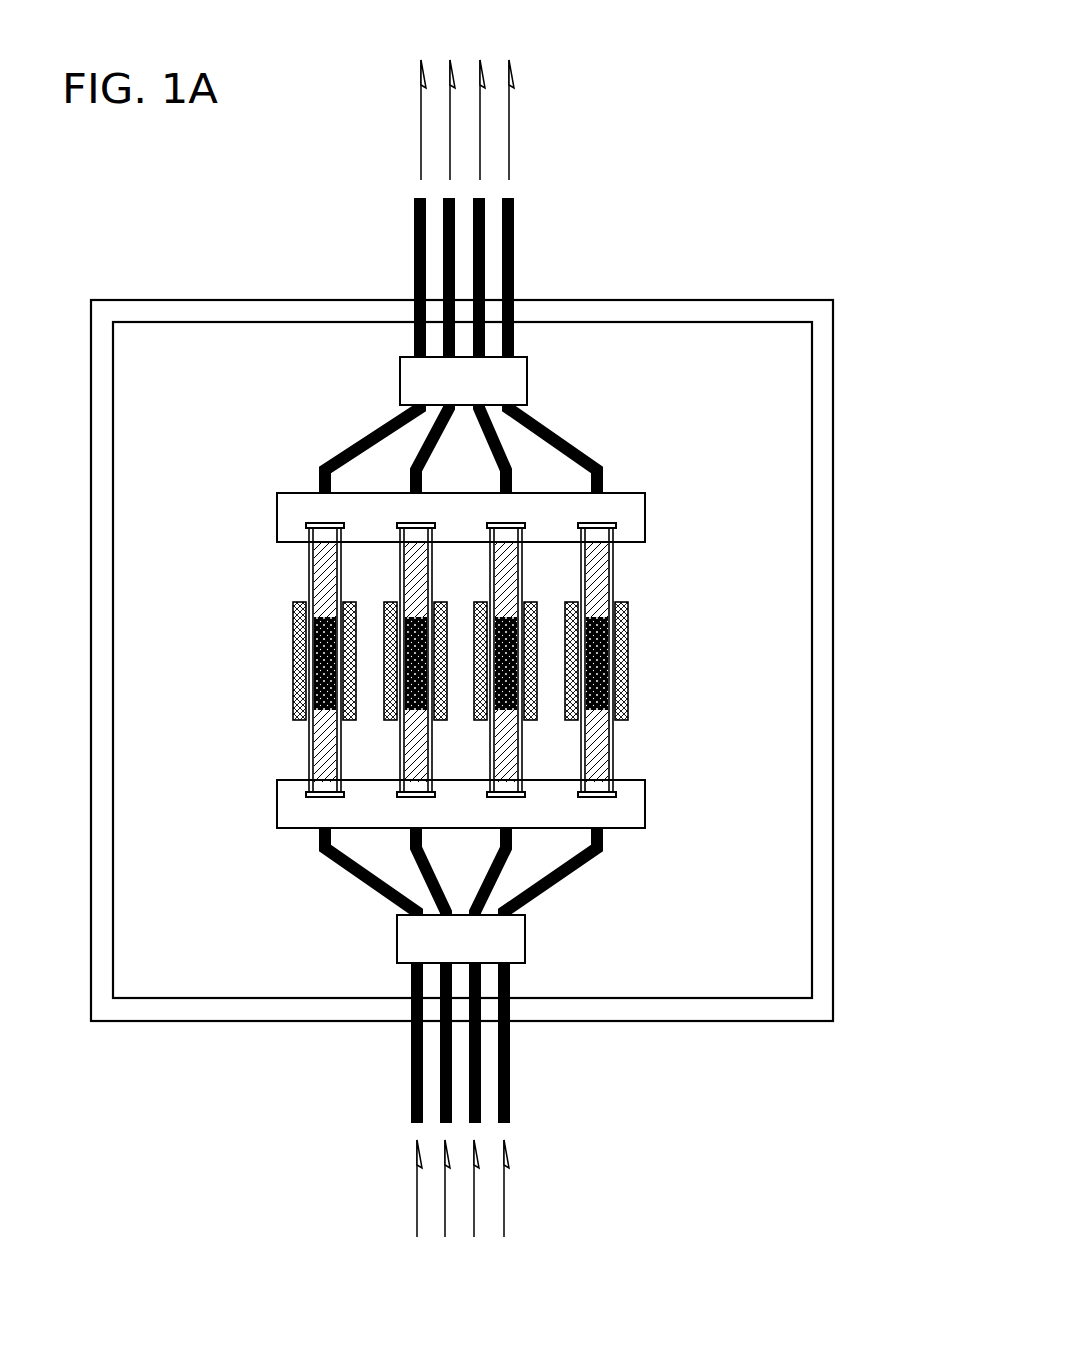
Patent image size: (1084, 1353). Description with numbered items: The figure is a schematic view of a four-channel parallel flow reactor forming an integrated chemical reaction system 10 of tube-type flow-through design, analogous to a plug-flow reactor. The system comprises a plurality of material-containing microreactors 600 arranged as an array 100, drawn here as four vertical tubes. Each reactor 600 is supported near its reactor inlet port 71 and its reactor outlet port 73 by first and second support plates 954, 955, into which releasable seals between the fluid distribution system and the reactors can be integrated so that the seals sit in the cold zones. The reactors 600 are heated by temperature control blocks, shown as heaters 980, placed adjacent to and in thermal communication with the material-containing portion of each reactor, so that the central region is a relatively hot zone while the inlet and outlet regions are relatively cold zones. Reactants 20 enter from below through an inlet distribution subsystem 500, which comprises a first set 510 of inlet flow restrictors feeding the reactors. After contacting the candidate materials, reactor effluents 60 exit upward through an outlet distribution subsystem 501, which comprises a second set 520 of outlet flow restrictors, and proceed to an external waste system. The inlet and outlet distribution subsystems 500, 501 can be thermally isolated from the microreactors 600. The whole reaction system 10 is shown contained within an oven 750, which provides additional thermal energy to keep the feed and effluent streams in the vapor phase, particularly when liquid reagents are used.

The integrated chemical reaction system 10 is at (694, 86).
The reactants 20 is at (542, 1262).
The reactor effluents 60 is at (555, 52).
The reactor inlet port 71 is at (403, 798).
The reactor outlet port 73 is at (403, 520).
The array of reactors 100 is at (235, 487).
The inlet distribution subsystem 500 is at (690, 1153).
The outlet distribution subsystem 501 is at (668, 172).
The first set of inlet flow restrictors 510 is at (413, 943).
The second set of outlet flow restrictors 520 is at (428, 383).
The microreactors 600 is at (508, 568).
The oven 750 is at (822, 760).
The first support plate 954 is at (277, 830).
The second support plate 955 is at (277, 493).
The heaters 980 is at (628, 722).